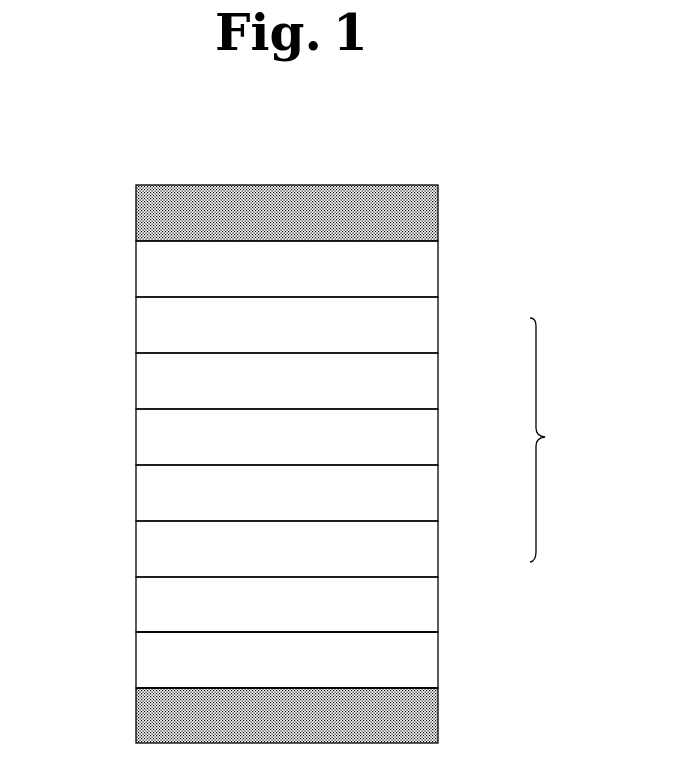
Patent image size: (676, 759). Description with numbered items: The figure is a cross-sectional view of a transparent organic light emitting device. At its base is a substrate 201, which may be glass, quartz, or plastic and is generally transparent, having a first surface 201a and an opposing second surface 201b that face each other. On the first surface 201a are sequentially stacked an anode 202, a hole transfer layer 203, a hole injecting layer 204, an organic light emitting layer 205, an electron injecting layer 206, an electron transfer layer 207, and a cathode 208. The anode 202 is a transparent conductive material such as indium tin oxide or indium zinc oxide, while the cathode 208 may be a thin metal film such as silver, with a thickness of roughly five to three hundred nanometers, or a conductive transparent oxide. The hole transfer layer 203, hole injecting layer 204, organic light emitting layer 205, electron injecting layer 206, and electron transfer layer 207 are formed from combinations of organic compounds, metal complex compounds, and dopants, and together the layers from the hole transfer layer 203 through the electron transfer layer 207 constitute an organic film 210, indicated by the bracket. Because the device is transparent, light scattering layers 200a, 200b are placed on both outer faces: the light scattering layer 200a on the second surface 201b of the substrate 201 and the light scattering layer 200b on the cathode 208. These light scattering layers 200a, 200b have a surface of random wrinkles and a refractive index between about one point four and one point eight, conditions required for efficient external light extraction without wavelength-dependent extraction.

The light scattering layer 200a is at (430, 719).
The light scattering layer 200b is at (430, 215).
The substrate 201 is at (430, 662).
The first surface 201a is at (165, 632).
The second surface 201b is at (162, 690).
The anode 202 is at (430, 606).
The hole transfer layer 203 is at (430, 551).
The hole injecting layer 204 is at (430, 496).
The organic light emitting layer 205 is at (430, 439).
The electron injecting layer 206 is at (430, 384).
The electron transfer layer 207 is at (430, 327).
The cathode 208 is at (430, 270).
The organic film 210 is at (561, 440).